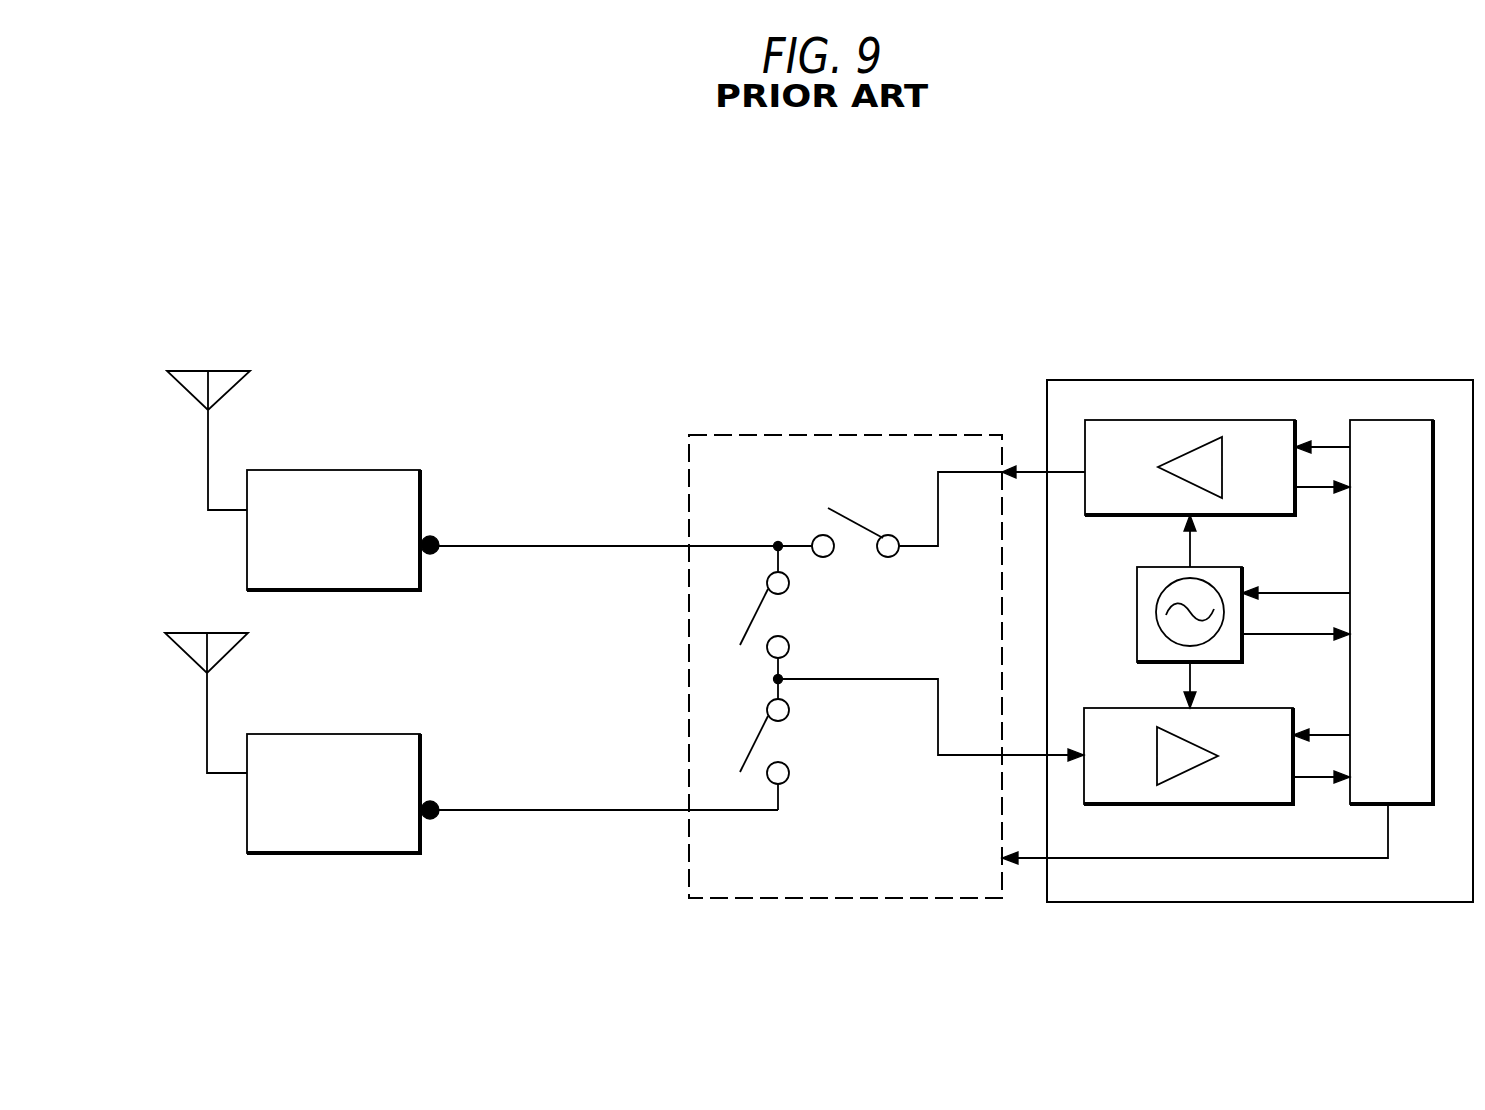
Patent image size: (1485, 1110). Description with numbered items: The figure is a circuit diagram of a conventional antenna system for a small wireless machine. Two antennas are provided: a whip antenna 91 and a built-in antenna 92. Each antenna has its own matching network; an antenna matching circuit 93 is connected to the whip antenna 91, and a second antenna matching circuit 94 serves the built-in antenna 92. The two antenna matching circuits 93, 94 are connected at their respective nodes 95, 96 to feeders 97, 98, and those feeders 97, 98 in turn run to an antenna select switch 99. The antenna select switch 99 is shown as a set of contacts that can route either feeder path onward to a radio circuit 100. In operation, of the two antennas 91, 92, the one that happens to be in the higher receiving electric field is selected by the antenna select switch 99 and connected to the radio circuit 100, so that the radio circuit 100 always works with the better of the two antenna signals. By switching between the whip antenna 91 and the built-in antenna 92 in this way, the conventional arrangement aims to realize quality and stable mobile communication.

The whip antenna 91 is at (192, 371).
The built-in antenna 92 is at (185, 655).
The antenna matching circuit 93 is at (317, 470).
The antenna matching circuit 94 is at (317, 734).
The node 95 is at (437, 538).
The node 96 is at (437, 802).
The feeder 97 is at (583, 546).
The feeder 98 is at (583, 810).
The antenna select switch 99 is at (718, 435).
The radio circuit 100 is at (1155, 380).